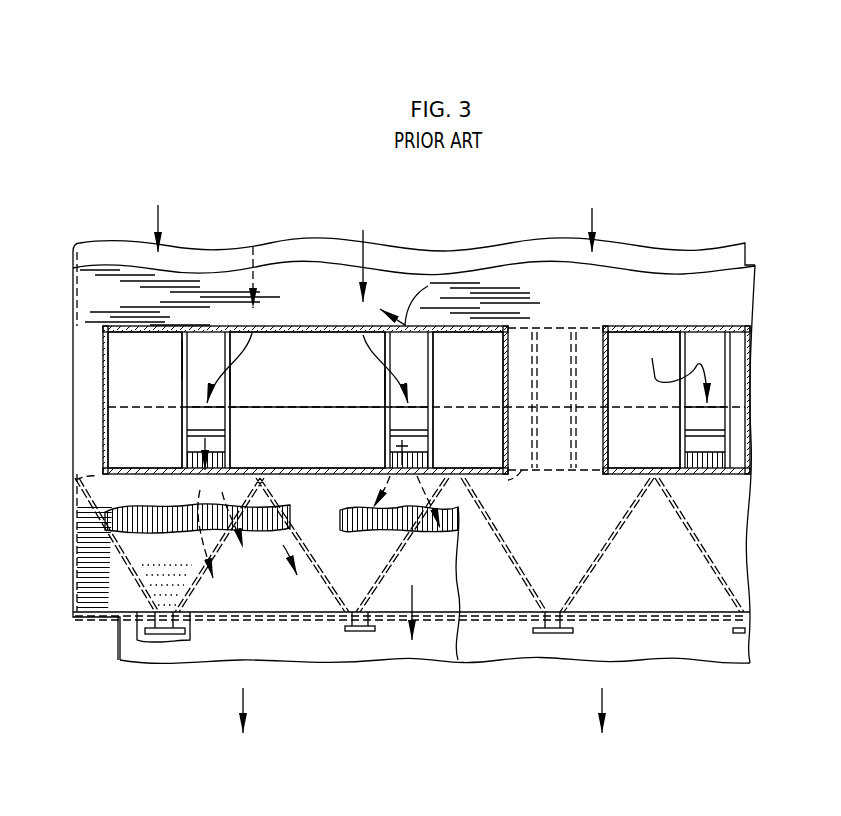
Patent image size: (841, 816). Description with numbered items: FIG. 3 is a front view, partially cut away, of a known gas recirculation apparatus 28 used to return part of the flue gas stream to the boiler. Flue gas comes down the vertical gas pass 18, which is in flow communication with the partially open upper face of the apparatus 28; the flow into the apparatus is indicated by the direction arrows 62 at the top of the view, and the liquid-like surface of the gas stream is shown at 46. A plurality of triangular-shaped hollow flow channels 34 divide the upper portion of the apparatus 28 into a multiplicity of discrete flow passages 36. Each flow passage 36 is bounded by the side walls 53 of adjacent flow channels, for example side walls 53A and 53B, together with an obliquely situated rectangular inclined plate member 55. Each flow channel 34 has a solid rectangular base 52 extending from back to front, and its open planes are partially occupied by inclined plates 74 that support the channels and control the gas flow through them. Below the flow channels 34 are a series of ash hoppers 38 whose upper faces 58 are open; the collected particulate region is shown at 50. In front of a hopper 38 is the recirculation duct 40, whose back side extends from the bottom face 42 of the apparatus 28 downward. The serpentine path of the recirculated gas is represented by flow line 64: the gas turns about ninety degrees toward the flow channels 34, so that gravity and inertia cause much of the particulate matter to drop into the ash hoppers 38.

The vertical gas pass 18 is at (325, 260).
The gas recirculation apparatus 28 is at (760, 510).
The flow channel 34 is at (680, 338).
The flow passage 36 is at (138, 395).
The ash hopper 38 is at (190, 590).
The recirculation duct 40 is at (118, 641).
The bottom face 42 is at (276, 604).
The liquid surface 46 is at (642, 272).
The settled sludge zone 50 is at (458, 545).
The base 52 is at (203, 333).
The side wall 53 is at (182, 360).
The side wall 53A is at (231, 386).
The side wall 53B is at (386, 384).
The inclined plate member 55 is at (266, 455).
The upper face 58 is at (522, 470).
The inflow direction 62 is at (160, 210).
The flow line 64 is at (252, 343).
The inclined plate 74 is at (193, 440).